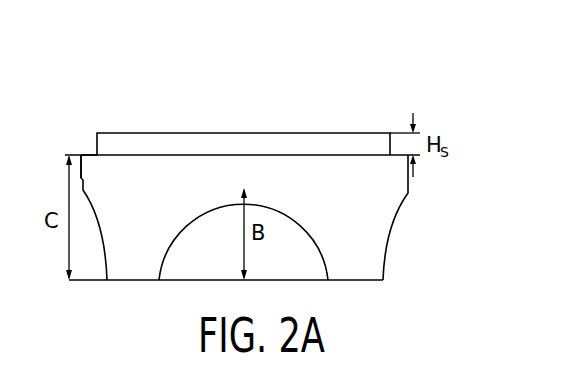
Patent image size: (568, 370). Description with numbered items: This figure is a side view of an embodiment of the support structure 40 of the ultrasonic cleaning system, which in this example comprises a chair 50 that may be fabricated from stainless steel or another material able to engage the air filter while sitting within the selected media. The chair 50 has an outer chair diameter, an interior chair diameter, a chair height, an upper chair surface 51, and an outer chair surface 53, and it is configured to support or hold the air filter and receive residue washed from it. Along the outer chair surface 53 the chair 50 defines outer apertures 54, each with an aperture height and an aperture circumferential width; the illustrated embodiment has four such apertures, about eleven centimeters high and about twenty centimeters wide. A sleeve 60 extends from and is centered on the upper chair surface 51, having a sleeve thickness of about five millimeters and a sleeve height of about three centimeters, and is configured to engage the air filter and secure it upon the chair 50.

The support structure 40 is at (492, 82).
The chair 50 is at (389, 197).
The upper chair surface 51 is at (92, 153).
The outer chair surface 53 is at (81, 178).
The outer apertures 54 is at (310, 252).
The sleeve 60 is at (373, 142).